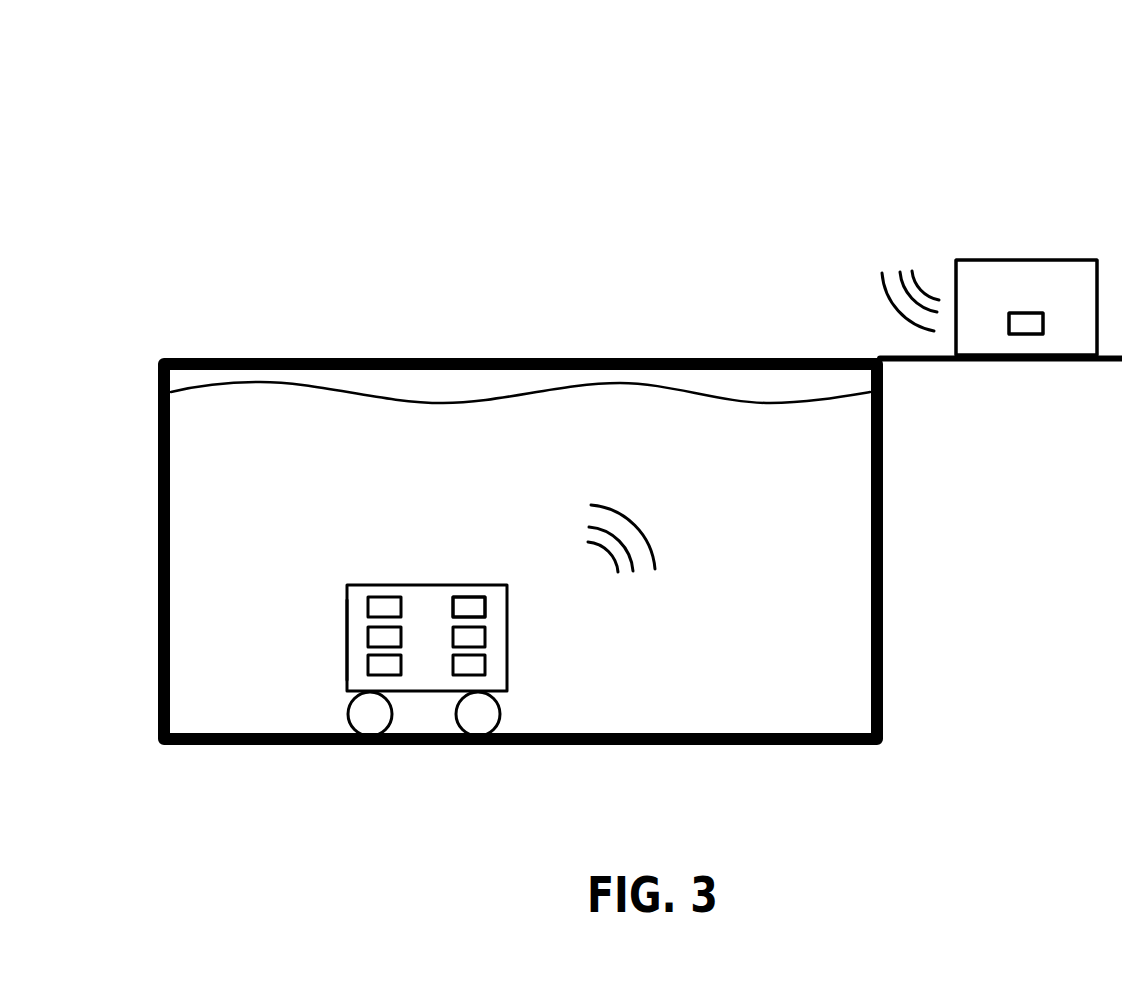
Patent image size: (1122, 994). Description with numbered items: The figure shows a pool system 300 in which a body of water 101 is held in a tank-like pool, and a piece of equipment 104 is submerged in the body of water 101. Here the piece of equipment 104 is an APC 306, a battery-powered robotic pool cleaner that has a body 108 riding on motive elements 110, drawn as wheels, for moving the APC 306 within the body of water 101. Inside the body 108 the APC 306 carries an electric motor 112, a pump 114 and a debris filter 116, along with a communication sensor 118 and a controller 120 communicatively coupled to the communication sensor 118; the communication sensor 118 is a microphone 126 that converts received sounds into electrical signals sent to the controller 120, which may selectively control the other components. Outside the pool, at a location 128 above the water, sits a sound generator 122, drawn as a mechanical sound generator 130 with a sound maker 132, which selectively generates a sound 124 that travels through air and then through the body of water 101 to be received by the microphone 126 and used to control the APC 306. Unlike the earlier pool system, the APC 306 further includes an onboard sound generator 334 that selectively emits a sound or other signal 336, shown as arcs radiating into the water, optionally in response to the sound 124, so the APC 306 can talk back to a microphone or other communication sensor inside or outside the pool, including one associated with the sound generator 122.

The pool system 300 is at (378, 161).
The body of water 101 is at (250, 481).
The piece of equipment 104 is at (314, 496).
The body 108 is at (442, 670).
The motive elements 110 is at (367, 717).
The electric motor 112 is at (385, 607).
The pump 114 is at (385, 665).
The debris filter 116 is at (468, 663).
The communication sensor 118 is at (465, 605).
The controller 120 is at (395, 635).
The microphone 126 is at (462, 610).
The APC 306 is at (345, 637).
The onboard sound generator 334 is at (477, 632).
The signal 336 is at (610, 505).
The sound generator 122 is at (961, 198).
The sound 124 is at (885, 300).
The location 128 is at (1071, 165).
The mechanical sound generator 130 is at (1036, 290).
The sound maker 132 is at (1027, 322).